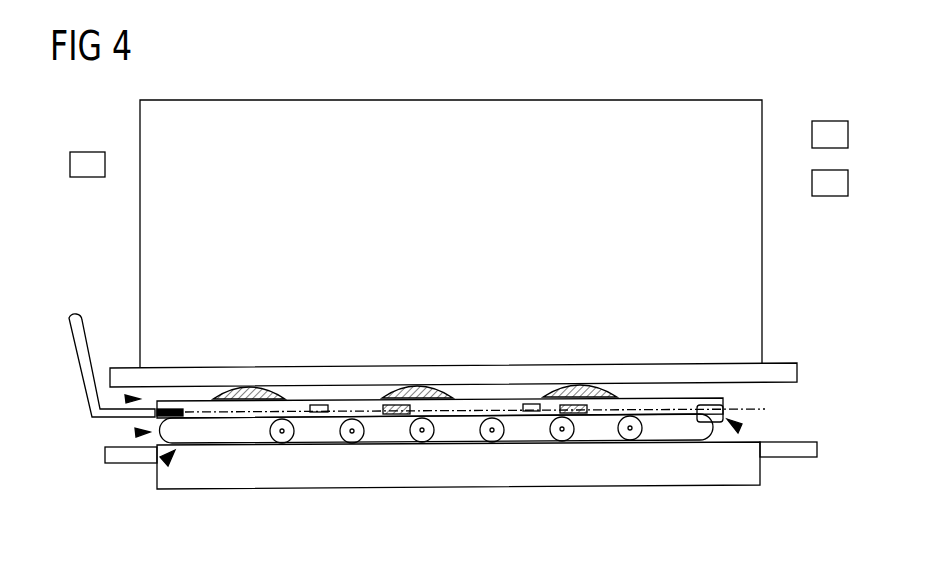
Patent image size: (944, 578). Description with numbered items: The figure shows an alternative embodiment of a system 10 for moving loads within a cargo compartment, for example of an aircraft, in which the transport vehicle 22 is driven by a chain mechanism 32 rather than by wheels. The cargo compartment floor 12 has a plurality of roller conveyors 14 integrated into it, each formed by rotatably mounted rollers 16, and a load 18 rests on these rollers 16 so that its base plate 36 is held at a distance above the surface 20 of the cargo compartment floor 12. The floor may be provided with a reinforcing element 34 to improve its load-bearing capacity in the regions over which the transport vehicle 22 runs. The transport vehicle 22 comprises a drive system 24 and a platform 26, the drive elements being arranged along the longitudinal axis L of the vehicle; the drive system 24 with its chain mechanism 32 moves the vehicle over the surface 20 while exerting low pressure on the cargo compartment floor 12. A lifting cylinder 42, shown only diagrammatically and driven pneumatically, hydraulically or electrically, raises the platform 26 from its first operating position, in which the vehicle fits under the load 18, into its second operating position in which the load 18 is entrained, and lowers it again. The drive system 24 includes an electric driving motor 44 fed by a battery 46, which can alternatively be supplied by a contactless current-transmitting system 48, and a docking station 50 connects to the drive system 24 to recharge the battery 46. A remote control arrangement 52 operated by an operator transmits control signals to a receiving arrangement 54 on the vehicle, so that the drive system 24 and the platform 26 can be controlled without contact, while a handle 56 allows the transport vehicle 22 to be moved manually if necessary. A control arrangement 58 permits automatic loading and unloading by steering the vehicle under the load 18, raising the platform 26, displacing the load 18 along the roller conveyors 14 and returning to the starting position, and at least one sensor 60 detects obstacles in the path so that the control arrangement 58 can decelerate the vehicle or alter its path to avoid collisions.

The system for moving loads 10 is at (792, 347).
The cargo compartment floor 12 is at (790, 458).
The roller conveyors 14 is at (126, 399).
The rollers 16 is at (252, 390).
The load 18 is at (748, 157).
The surface 20 is at (778, 441).
The transport vehicle 22 is at (745, 432).
The drive system 24 is at (136, 433).
The platform 26 is at (485, 408).
The chain mechanism 32 is at (162, 463).
The reinforcing element 34 is at (468, 474).
The base plate 36 is at (661, 372).
The lifting cylinder 42 is at (397, 420).
The electric driving motor 44 is at (573, 442).
The battery 46 is at (710, 422).
The contactless current-transmitting system 48 is at (832, 132).
The docking station 50 is at (831, 187).
The remote control arrangement 52 is at (87, 173).
The receiving arrangement 54 is at (172, 409).
The handle 56 is at (80, 317).
The control arrangement 58 is at (318, 405).
The sensor 60 is at (531, 404).
The longitudinal axis L is at (750, 410).